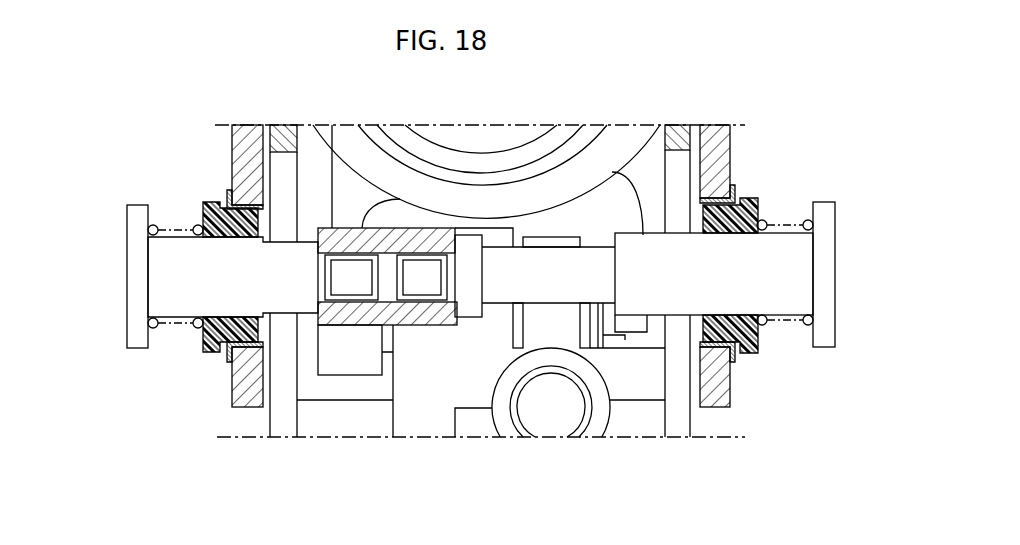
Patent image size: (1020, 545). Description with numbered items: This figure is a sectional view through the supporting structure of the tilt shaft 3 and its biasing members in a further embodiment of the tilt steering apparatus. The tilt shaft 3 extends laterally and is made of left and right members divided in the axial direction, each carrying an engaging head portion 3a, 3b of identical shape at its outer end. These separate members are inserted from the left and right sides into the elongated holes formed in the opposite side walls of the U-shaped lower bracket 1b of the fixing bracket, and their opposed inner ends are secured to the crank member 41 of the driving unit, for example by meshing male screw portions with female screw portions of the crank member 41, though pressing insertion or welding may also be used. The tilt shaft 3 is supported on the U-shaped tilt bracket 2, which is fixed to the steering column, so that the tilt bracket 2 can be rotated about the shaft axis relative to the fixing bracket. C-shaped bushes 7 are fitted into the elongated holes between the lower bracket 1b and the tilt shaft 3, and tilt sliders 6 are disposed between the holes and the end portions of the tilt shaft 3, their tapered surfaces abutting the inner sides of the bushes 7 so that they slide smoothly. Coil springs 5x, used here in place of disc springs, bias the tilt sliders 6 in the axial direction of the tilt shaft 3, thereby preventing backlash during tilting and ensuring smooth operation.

The lower bracket 1b is at (237, 142).
The tilt bracket 2 is at (287, 128).
The tilt shaft 3 is at (826, 196).
The engaging head portion 3a is at (140, 348).
The engaging head portion 3b is at (826, 348).
The coil spring 5x is at (155, 225).
The tilt slider 6 is at (212, 352).
The bush 7 is at (229, 190).
The crank member 41 is at (352, 362).